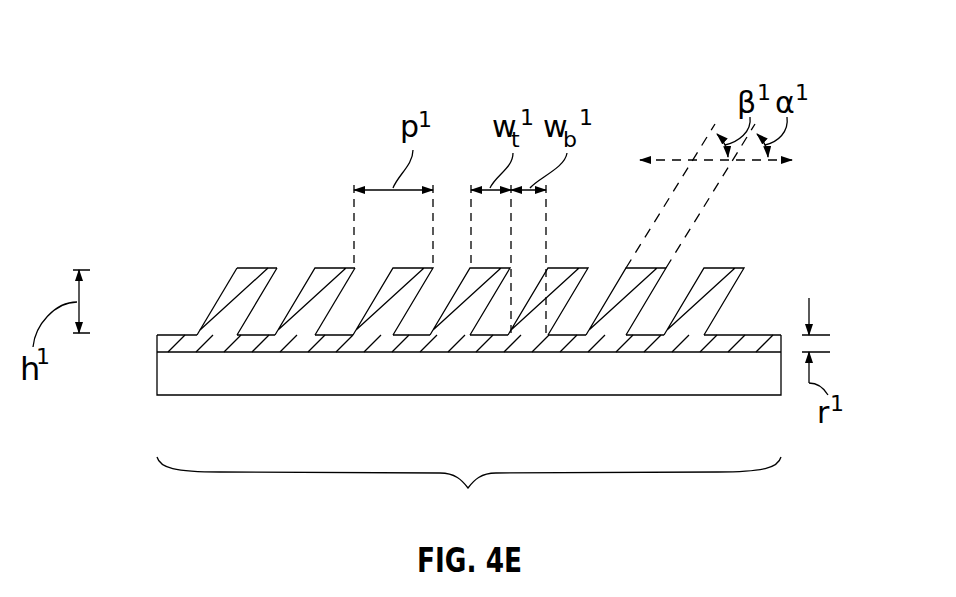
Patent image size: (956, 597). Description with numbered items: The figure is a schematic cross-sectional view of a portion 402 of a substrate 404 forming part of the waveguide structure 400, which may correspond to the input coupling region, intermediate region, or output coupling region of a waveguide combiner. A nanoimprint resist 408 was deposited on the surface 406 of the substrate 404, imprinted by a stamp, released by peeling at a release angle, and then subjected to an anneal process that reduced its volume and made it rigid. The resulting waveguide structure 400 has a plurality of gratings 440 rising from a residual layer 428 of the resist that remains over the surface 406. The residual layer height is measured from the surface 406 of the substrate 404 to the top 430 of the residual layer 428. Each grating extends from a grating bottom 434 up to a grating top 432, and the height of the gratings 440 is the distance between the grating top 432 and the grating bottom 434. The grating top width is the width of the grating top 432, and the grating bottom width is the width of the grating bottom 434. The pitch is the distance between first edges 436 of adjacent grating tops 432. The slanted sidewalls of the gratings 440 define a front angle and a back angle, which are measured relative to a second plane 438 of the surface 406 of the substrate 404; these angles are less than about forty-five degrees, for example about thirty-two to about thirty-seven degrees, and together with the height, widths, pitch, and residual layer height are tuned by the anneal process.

The waveguide structure 400 is at (794, 36).
The portion of the substrate 402 is at (469, 491).
The substrate 404 is at (273, 362).
The surface of the substrate 406 is at (170, 345).
The nanoimprint resist 408 is at (188, 332).
The residual layer 428 is at (642, 342).
The top of the residual layer 430 is at (732, 333).
The grating top 432 is at (258, 267).
The grating bottom 434 is at (218, 330).
The first edge of the grating top 436 is at (352, 267).
The second plane 438 is at (764, 161).
The plurality of gratings 440 is at (317, 305).